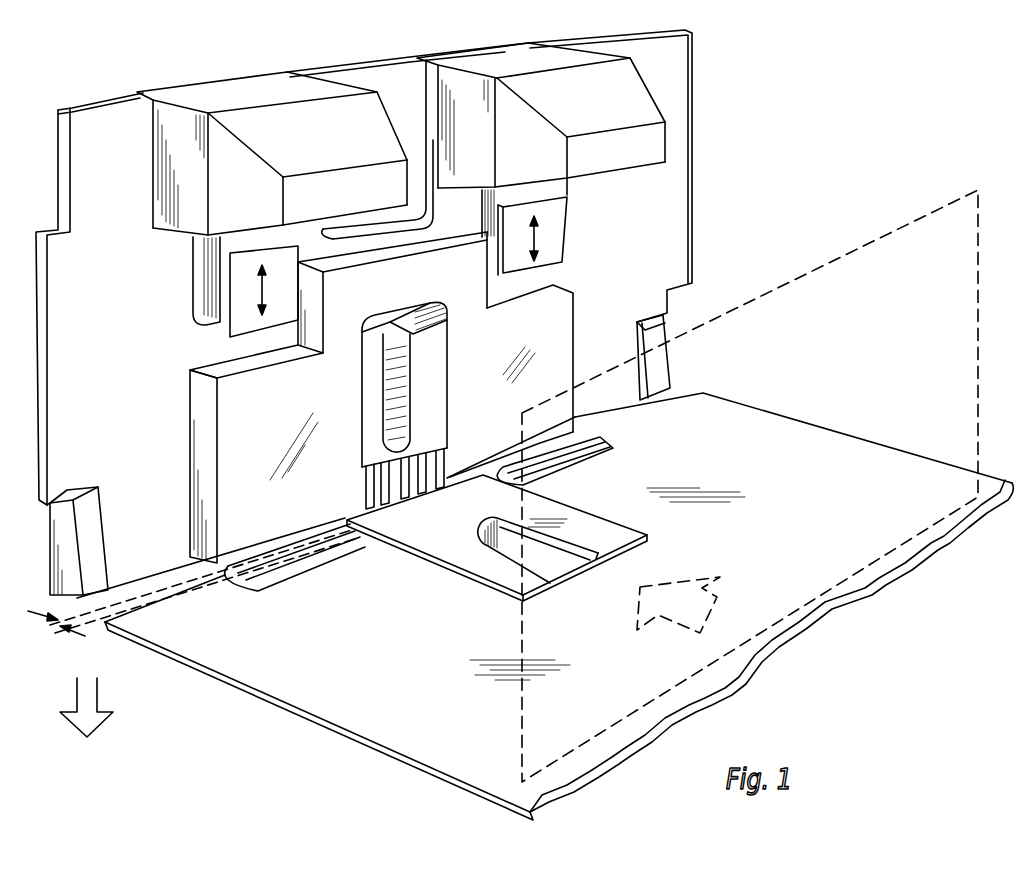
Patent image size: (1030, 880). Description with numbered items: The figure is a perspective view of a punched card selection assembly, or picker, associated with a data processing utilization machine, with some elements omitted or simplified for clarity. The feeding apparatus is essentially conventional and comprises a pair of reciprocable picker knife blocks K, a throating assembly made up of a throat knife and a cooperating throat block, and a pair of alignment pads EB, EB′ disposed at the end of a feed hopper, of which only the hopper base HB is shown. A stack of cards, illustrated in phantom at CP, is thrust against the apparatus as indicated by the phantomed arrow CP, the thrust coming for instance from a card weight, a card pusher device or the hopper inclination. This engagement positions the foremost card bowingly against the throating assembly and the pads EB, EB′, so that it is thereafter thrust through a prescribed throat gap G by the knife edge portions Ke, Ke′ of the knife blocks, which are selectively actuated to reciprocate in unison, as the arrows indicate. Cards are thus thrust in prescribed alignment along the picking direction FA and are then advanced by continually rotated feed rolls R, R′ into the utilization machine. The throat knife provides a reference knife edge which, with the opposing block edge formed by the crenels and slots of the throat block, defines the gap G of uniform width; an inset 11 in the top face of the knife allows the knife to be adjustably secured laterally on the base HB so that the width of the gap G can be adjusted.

The picker knife block K is at (210, 335).
The knife edge portion Ke is at (240, 255).
The knife edge portion Ke′ is at (565, 202).
The alignment pad EB is at (106, 517).
The alignment pad EB′ is at (672, 353).
The hopper base HB is at (412, 667).
The inset 11 is at (553, 567).
The feed roll R is at (327, 550).
The feed roll R′ is at (610, 438).
The card stack / thrust direction CP is at (835, 240).
The throat gap G is at (193, 592).
The picking direction FA is at (97, 690).